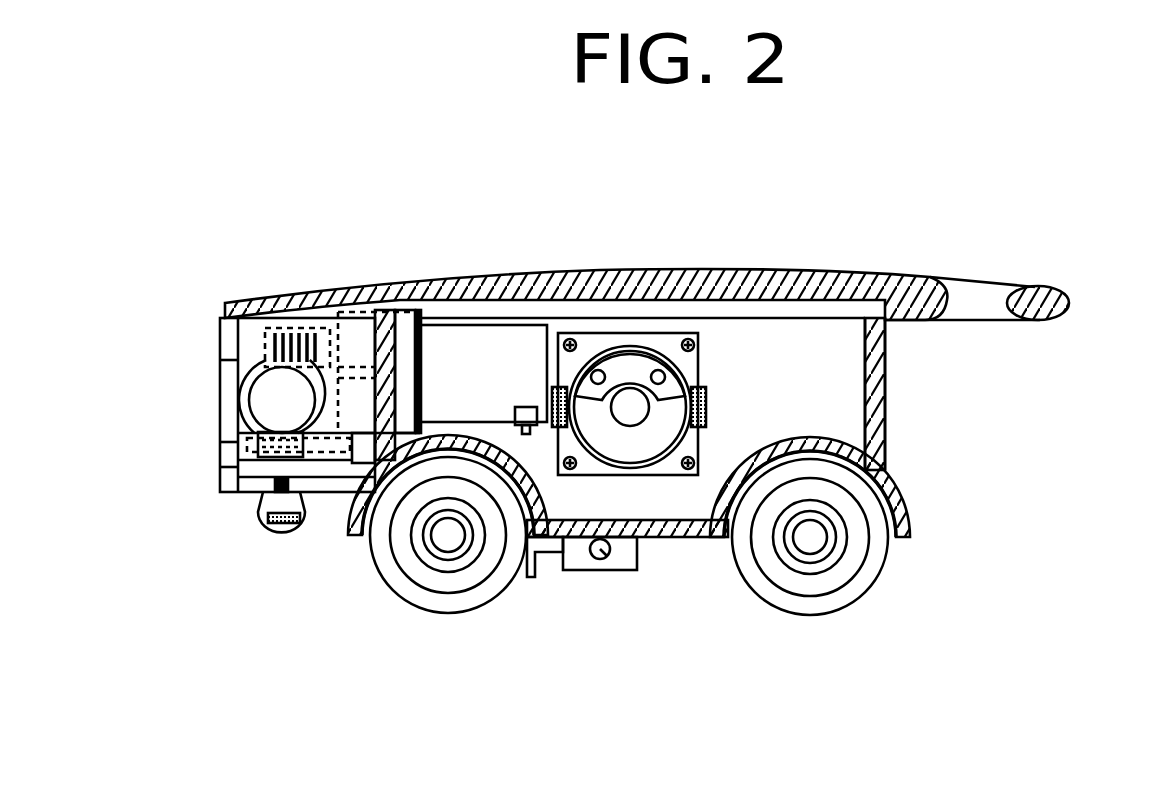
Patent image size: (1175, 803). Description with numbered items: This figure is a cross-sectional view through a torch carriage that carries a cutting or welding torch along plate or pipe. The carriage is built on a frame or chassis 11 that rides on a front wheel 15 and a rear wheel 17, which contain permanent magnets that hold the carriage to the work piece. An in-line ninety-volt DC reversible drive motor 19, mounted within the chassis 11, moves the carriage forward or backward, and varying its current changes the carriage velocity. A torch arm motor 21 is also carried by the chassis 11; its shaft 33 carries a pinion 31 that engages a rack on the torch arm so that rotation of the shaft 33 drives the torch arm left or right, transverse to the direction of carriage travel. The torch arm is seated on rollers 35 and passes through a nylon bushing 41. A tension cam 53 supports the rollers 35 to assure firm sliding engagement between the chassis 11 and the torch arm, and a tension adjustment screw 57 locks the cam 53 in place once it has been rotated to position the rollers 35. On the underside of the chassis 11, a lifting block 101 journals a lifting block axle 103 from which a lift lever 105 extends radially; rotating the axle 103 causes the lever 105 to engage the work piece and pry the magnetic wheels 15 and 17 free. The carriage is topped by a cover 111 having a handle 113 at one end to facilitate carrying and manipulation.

The chassis 11 is at (888, 402).
The front wheel 15 is at (437, 597).
The rear wheel 17 is at (838, 600).
The drive motor 19 is at (697, 380).
The torch arm motor 21 is at (478, 357).
The pinion 31 is at (275, 343).
The shaft 33 is at (353, 363).
The rollers 35 is at (265, 468).
The nylon bushing 41 is at (238, 397).
The tension cam 53 is at (338, 472).
The tension adjustment screw 57 is at (275, 522).
The lifting block 101 is at (574, 560).
The lifting block axle 103 is at (600, 555).
The lift lever 105 is at (525, 578).
The cover 111 is at (900, 295).
The handle 113 is at (1040, 298).